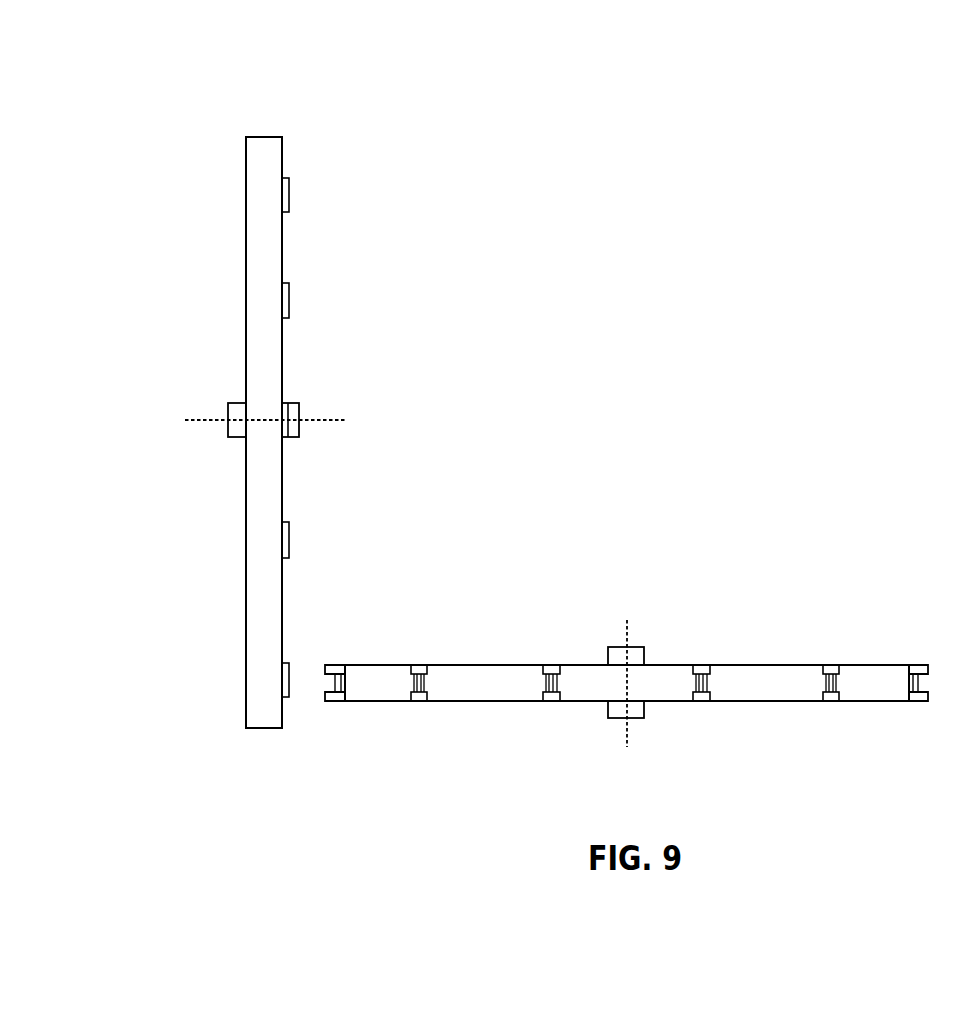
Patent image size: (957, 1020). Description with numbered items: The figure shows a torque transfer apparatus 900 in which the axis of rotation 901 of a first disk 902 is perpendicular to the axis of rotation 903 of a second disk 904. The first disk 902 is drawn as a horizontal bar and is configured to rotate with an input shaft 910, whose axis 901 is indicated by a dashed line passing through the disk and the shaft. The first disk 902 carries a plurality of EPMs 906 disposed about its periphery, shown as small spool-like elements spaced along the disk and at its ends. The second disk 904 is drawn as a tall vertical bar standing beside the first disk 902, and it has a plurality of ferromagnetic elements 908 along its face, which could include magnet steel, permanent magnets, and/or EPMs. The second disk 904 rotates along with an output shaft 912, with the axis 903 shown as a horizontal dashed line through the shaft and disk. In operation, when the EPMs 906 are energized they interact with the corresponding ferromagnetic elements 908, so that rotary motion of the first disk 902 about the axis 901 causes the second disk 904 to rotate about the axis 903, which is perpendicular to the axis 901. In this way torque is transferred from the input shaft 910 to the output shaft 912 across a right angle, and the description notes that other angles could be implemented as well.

The torque transfer apparatus 900 is at (172, 96).
The axis of rotation 901 is at (632, 632).
The first disk 902 is at (382, 665).
The axis of rotation 903 is at (327, 418).
The second disk 904 is at (283, 240).
The EPMs 906 is at (332, 702).
The ferromagnetic elements 908 is at (285, 178).
The input shaft 910 is at (608, 650).
The output shaft 912 is at (228, 410).